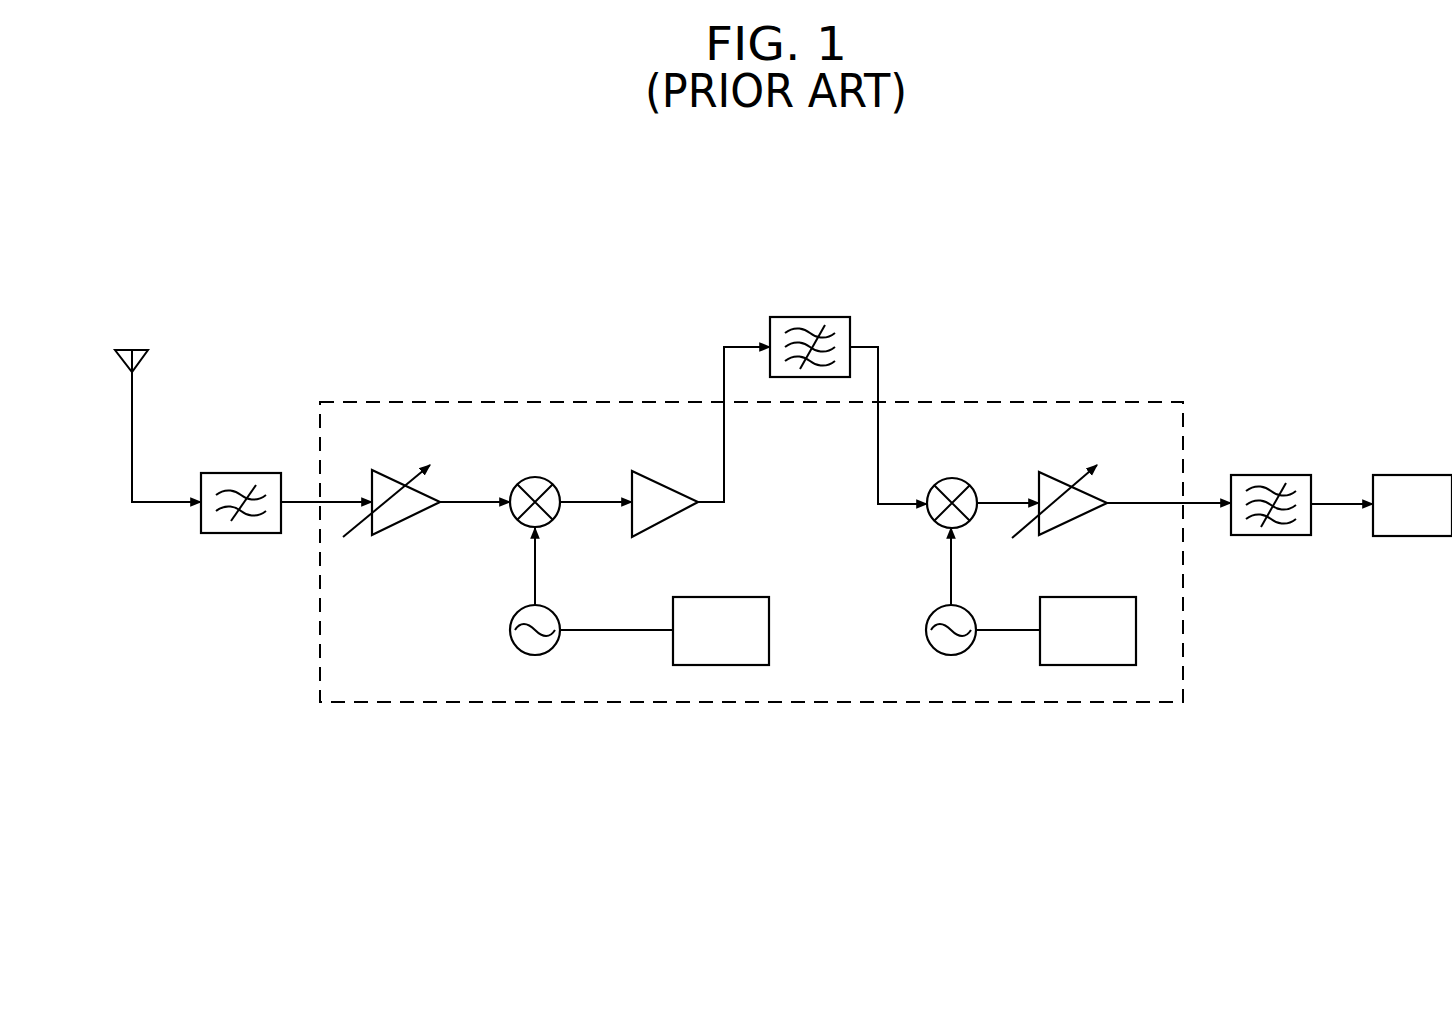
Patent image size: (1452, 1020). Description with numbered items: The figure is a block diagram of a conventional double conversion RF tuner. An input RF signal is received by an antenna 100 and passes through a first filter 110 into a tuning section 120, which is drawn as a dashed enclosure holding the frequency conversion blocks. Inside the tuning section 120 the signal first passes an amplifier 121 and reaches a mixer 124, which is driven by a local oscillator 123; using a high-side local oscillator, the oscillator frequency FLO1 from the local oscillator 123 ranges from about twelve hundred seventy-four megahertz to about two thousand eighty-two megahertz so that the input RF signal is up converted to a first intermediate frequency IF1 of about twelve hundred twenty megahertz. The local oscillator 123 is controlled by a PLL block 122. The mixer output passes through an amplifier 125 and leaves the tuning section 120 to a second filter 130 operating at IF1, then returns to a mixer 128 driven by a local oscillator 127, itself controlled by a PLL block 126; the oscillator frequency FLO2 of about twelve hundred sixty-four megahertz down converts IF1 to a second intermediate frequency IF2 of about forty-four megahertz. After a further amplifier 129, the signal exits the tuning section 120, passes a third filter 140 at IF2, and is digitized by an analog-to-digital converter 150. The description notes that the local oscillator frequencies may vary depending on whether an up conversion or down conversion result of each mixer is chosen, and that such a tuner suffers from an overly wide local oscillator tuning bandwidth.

The antenna 100 is at (136, 350).
The first filter 110 is at (265, 473).
The tuning section 120 is at (1143, 402).
The variable gain amplifier 121 is at (383, 468).
The first PLL 122 is at (755, 597).
The local oscillator 123 is at (548, 610).
The mixer 124 is at (548, 480).
The first IF amplifier 125 is at (660, 484).
The second PLL 126 is at (1118, 597).
The local oscillator 127 is at (965, 610).
The mixer 128 is at (965, 482).
The second variable gain amplifier 129 is at (1053, 472).
The second filter 130 is at (850, 332).
The third filter 140 is at (1293, 475).
The analog-to-digital converter (A/D) 150 is at (1425, 475).